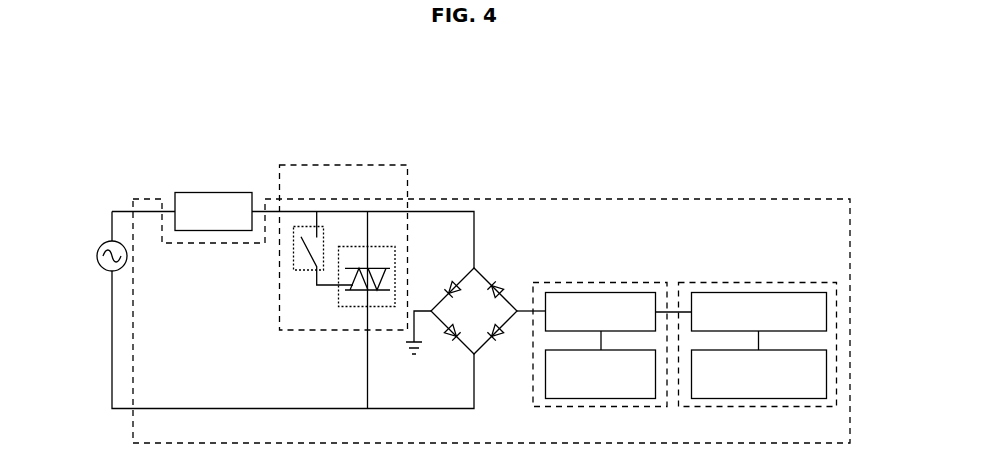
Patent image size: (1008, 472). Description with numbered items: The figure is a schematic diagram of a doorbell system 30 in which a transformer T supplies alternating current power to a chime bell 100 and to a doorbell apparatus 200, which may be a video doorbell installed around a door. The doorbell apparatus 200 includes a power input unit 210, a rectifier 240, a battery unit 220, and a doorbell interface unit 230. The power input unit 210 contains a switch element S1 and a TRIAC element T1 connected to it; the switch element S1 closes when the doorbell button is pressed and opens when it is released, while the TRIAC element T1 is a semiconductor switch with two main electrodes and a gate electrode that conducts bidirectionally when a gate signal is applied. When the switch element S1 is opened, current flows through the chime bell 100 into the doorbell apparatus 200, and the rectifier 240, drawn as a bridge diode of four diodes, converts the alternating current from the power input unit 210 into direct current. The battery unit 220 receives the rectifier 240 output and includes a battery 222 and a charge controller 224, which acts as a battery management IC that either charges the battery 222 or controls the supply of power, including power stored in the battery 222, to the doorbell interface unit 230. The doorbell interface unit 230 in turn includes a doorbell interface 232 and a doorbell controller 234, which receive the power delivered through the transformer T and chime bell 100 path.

The doorbell system 30 is at (463, 136).
The chime bell 100 is at (212, 192).
The doorbell apparatus 200 is at (781, 198).
The power input unit 210 is at (299, 165).
The battery unit 220 is at (575, 283).
The battery 222 is at (637, 399).
The charge controller 224 is at (646, 292).
The doorbell interface unit 230 is at (720, 283).
The doorbell interface 232 is at (814, 292).
The doorbell controller 234 is at (807, 399).
The rectifier 240 is at (477, 265).
The transformer T is at (99, 267).
The switch element S1 is at (328, 230).
The TRIAC element T1 is at (345, 307).